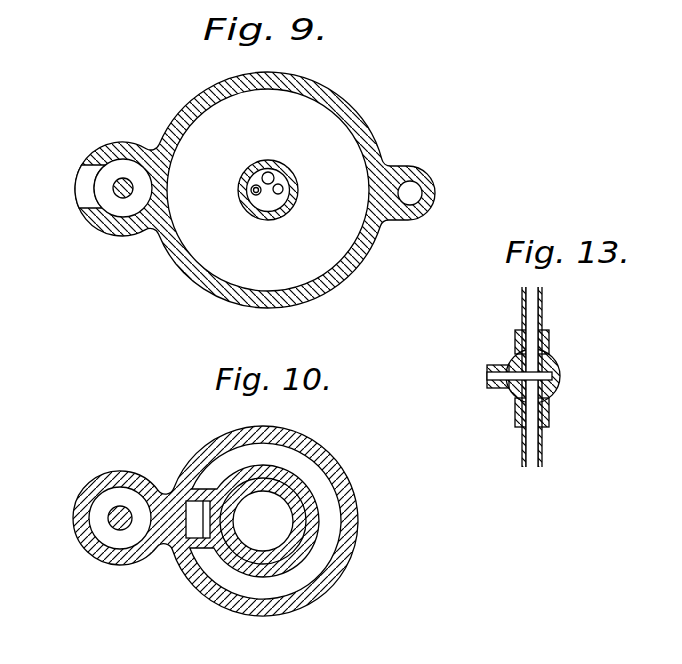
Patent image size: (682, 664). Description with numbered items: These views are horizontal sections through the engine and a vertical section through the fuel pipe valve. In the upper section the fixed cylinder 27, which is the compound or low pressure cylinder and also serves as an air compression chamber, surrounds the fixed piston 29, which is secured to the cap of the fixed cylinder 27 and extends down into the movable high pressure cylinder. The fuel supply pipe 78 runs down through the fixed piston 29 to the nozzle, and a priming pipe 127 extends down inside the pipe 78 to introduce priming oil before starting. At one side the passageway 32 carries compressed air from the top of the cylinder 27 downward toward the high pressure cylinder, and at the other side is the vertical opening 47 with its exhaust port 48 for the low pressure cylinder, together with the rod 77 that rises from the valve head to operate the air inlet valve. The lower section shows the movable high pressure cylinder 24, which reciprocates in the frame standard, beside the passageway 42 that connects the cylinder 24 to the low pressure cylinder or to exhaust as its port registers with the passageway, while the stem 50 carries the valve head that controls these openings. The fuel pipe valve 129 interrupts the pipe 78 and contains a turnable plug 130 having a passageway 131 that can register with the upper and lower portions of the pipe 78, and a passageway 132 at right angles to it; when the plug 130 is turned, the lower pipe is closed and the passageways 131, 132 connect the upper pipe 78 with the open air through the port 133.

In FIG. 9, the fixed cylinder 27 is at (365, 137).
In FIG. 9, the port 48 is at (83, 176).
In FIG. 9, the vertical opening 47 is at (123, 210).
In FIG. 10, the vertical opening 47 is at (105, 502).
In FIG. 9, the rod 77 is at (117, 190).
In FIG. 9, the passageway 32 is at (412, 193).
In FIG. 9, the fixed piston 29 is at (287, 212).
In FIG. 9, the priming pipe 127 is at (251, 184).
In FIG. 9, the fuel supply pipe 78 is at (250, 193).
In FIG. 13, the fuel supply pipe 78 is at (530, 304).
In FIG. 10, the movable cylinder 24 is at (300, 522).
In FIG. 10, the stem 50 is at (110, 523).
In FIG. 10, the passageway 42 is at (192, 512).
In FIG. 13, the plug 130 is at (512, 360).
In FIG. 13, the valve 129 is at (512, 393).
In FIG. 13, the passageway 131 is at (547, 353).
In FIG. 13, the passageway 132 is at (545, 378).
In FIG. 13, the port 133 is at (487, 378).